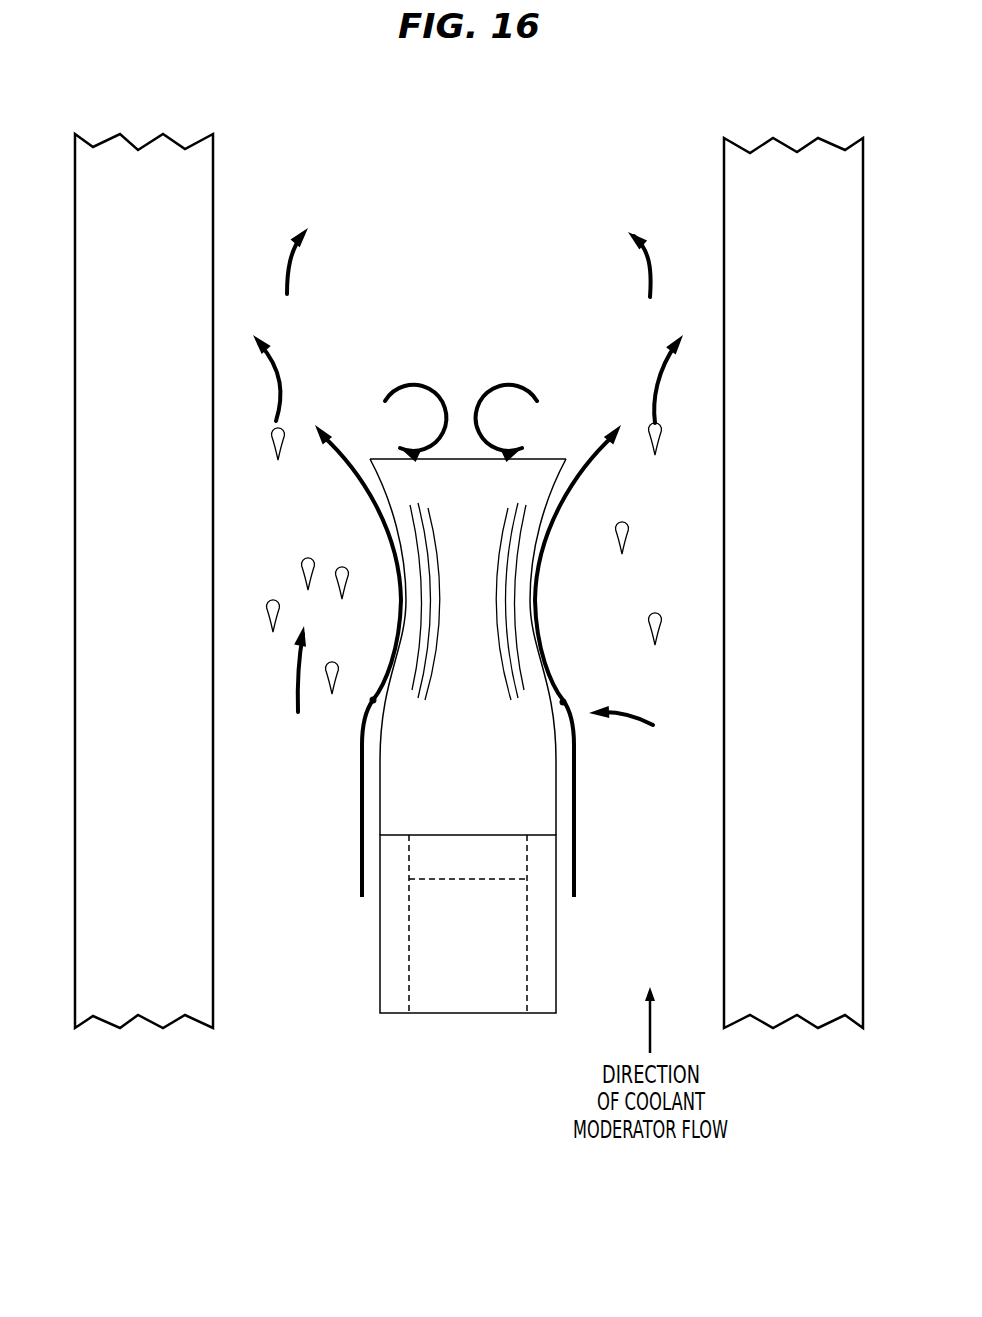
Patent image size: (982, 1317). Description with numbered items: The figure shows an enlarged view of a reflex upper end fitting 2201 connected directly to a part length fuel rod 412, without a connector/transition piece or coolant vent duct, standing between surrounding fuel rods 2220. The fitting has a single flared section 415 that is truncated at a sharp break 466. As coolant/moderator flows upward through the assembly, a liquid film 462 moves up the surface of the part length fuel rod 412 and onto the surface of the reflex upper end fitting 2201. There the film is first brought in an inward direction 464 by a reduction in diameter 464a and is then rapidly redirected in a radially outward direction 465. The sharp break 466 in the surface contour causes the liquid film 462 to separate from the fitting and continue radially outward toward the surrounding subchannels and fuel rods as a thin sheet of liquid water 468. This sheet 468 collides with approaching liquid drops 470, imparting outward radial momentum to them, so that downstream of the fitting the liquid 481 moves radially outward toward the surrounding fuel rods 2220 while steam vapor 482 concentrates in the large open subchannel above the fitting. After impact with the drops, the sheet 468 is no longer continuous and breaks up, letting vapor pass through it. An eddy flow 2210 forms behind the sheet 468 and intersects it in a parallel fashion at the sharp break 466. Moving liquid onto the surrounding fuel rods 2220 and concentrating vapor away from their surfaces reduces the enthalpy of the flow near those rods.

The surrounding fuel rods 2220 is at (170, 487).
The steam vapor 482 is at (286, 281).
The liquid 481 is at (686, 372).
The thin sheet of liquid water 468 is at (340, 452).
The radially outward direction 465 is at (368, 490).
The eddy flow 2210 is at (461, 423).
The sharp break 466 is at (560, 475).
The flared section 415 is at (533, 478).
The inward direction 464 is at (400, 620).
The reduction in diameter 464a is at (513, 602).
The liquid film 462 is at (381, 687).
The liquid drops 470 is at (300, 566).
The reflex upper end fitting 2201 is at (646, 725).
The part length fuel rod 412 is at (558, 940).